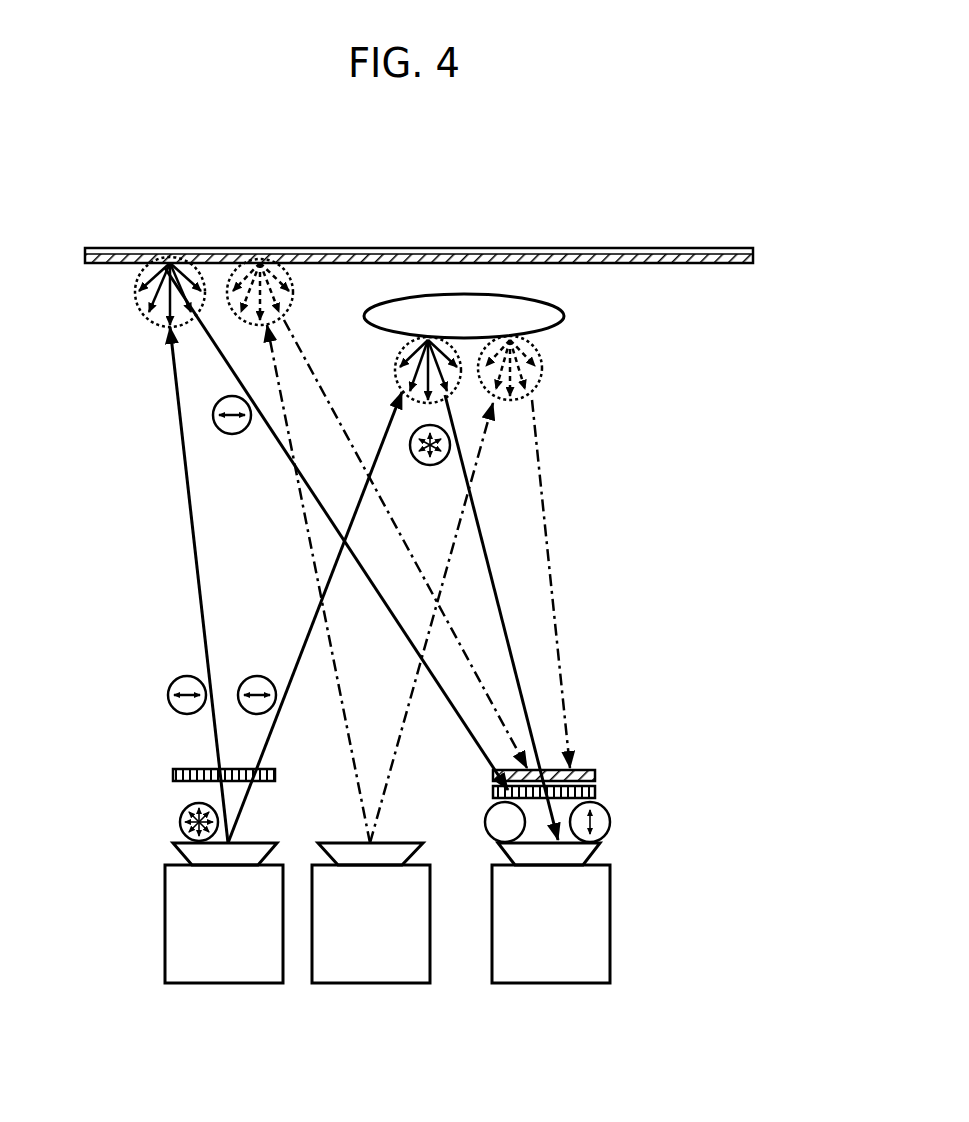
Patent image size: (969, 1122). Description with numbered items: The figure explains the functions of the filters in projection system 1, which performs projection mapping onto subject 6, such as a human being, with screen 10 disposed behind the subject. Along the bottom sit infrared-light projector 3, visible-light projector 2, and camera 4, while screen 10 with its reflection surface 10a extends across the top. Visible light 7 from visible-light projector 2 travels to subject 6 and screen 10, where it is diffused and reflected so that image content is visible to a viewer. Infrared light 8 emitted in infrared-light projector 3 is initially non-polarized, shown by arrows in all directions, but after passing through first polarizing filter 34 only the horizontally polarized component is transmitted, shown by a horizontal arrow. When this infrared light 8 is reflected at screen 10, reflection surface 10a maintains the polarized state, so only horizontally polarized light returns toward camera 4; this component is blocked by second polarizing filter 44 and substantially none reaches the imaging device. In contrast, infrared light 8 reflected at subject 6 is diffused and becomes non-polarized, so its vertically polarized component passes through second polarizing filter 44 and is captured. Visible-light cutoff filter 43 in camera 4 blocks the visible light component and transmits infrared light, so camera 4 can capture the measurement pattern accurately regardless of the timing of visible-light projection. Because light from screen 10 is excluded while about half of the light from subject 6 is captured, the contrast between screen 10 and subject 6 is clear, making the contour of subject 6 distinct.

The projection system 1 is at (104, 521).
The visible-light projector 2 is at (372, 985).
The infrared-light projector 3 is at (228, 985).
The camera 4 is at (553, 985).
The subject 6 is at (576, 331).
The visible light 7 is at (350, 740).
The infrared light 8 is at (307, 637).
The screen 10 is at (421, 248).
The reflection surface 10a is at (651, 264).
The first polarizing filter 34 is at (173, 775).
The visible-light cutoff filter 43 is at (597, 774).
The second polarizing filter 44 is at (597, 791).